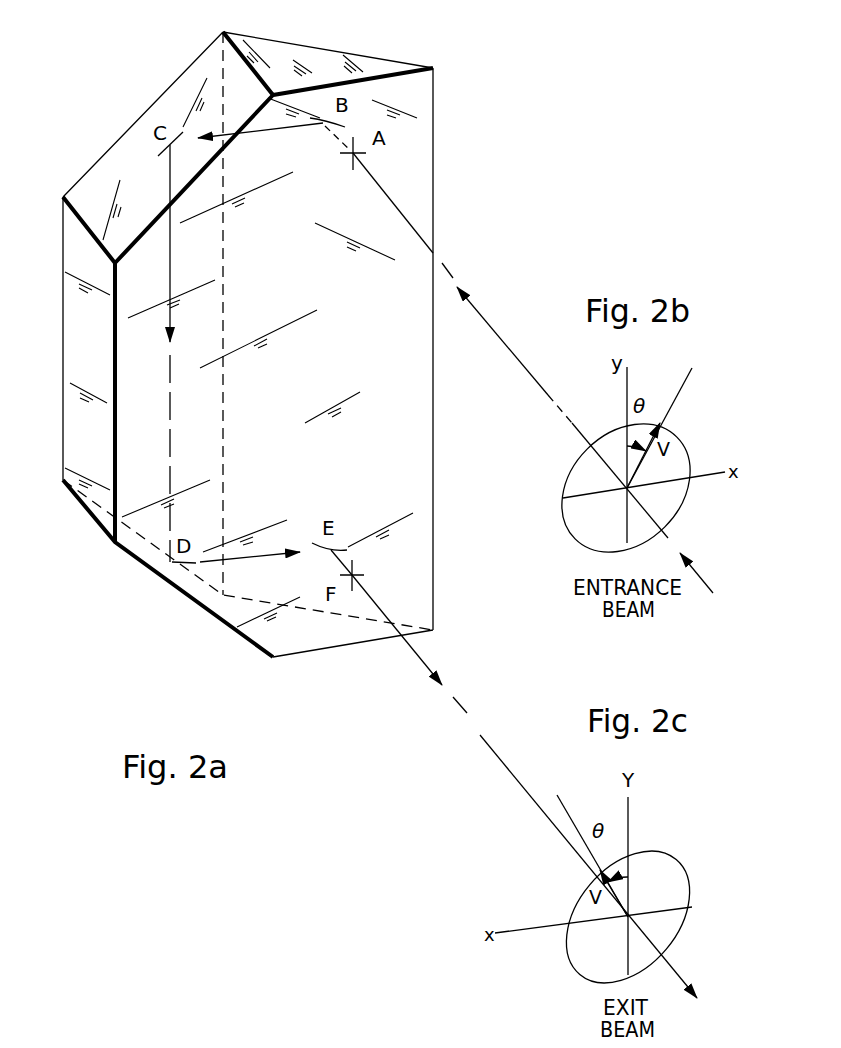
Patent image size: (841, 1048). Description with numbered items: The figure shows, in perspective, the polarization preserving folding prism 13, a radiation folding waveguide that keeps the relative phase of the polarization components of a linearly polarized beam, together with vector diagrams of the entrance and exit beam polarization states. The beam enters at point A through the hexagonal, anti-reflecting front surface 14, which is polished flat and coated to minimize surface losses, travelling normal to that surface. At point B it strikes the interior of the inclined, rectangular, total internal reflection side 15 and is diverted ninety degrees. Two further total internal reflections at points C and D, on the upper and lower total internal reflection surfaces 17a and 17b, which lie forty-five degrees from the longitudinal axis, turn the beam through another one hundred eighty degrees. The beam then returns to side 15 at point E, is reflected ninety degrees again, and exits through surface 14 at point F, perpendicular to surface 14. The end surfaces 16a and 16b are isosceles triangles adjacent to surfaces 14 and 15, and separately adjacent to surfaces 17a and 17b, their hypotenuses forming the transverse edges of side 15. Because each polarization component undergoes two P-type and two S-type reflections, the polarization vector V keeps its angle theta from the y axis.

The polarization preserving folding prism 13 is at (473, 195).
The hexagonal anti-reflecting front surface 14 is at (420, 396).
The inclined rectangular total internal reflection side 15 is at (421, 162).
The upper end surface 16a is at (288, 58).
The lower end surface 16b is at (317, 643).
The upper total internal reflection surface 17a is at (102, 178).
The lower total internal reflection surface 17b is at (170, 584).